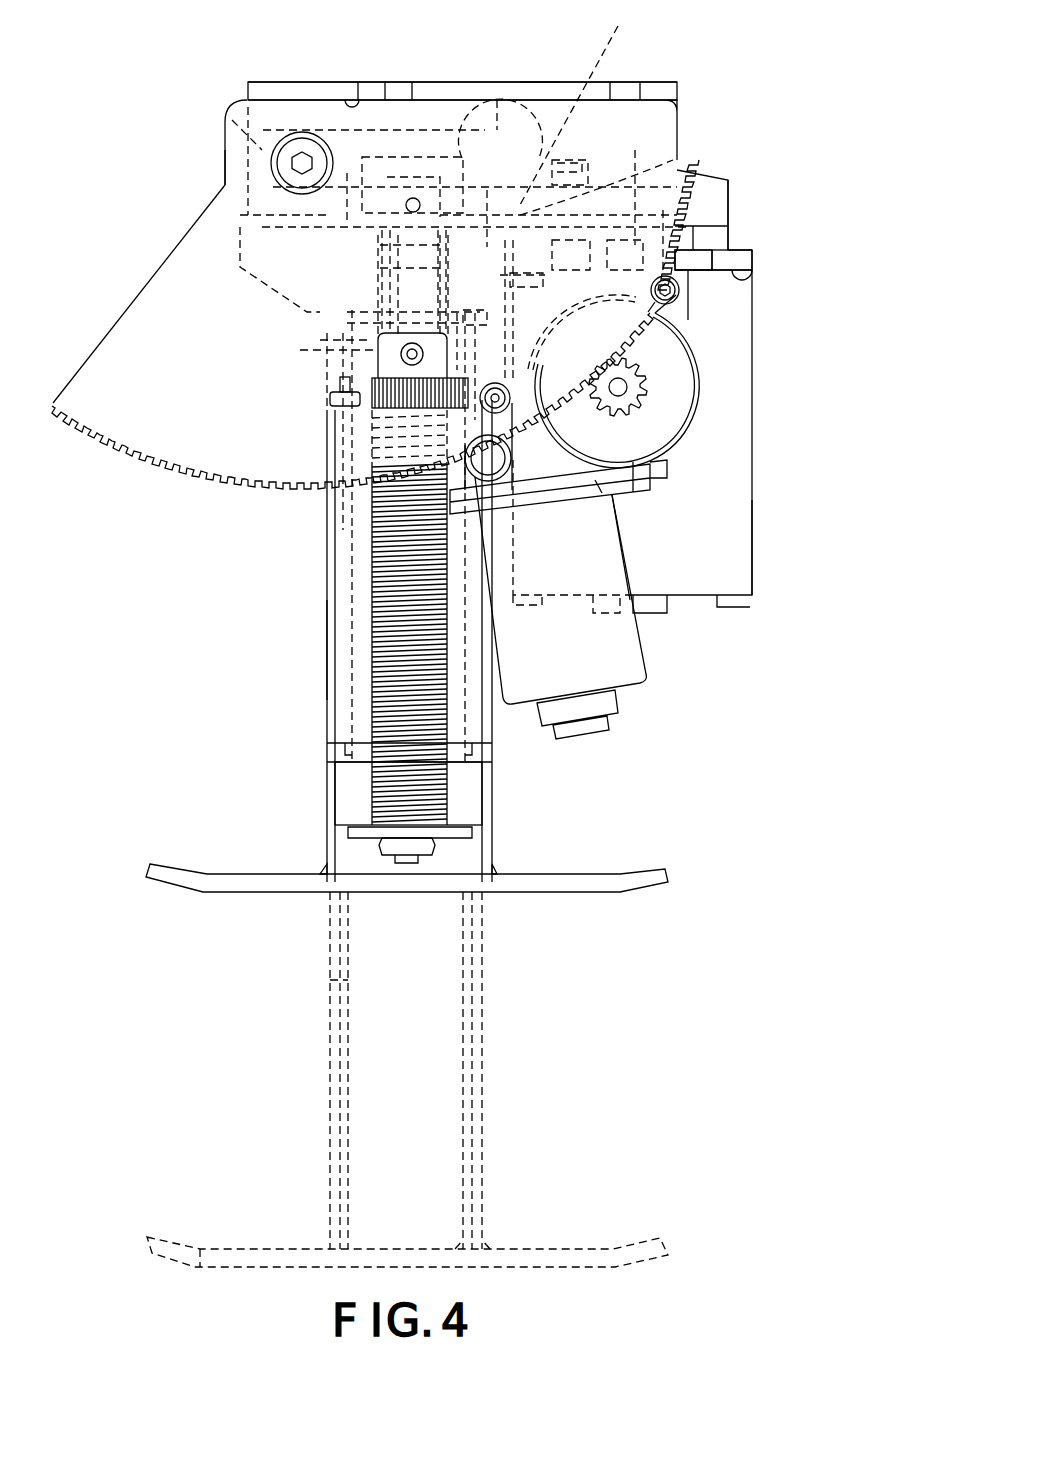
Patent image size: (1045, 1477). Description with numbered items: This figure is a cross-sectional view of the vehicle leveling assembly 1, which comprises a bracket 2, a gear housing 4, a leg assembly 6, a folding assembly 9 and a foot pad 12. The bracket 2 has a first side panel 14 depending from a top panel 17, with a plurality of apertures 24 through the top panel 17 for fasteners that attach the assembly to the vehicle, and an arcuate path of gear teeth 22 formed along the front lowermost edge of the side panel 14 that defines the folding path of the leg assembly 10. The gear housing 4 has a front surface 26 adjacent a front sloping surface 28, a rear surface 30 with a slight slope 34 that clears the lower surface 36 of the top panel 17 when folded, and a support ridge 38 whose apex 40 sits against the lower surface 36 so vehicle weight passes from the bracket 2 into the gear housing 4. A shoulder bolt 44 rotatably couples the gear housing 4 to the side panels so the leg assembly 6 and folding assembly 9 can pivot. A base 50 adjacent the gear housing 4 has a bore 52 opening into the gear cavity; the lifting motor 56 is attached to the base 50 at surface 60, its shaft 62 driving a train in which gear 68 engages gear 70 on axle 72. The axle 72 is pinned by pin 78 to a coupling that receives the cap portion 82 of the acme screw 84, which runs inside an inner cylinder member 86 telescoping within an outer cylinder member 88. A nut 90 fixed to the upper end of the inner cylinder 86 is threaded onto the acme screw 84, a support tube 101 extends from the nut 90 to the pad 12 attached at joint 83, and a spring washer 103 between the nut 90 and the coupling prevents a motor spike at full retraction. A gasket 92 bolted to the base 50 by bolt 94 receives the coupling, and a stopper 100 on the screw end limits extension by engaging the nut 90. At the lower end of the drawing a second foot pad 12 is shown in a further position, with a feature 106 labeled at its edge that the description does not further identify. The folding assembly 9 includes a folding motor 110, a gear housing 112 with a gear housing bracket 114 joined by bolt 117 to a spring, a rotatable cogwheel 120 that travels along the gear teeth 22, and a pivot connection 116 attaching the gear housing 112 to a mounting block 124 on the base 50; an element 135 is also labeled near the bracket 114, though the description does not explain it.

The vehicle leveling assembly 1 is at (848, 682).
The bracket 2 is at (315, 60).
The gear housing 4 is at (740, 160).
The leg assembly 6 is at (815, 533).
The folding assembly 9 is at (686, 700).
The leg assembly 10 is at (278, 769).
The foot pad 12 is at (625, 874).
The first side panel 14 is at (667, 118).
The top panel 17 is at (522, 82).
The path of gear teeth 22 is at (270, 483).
The apertures 24 is at (403, 88).
The front surface 26 is at (730, 195).
The front sloping surface 28 is at (590, 117).
The rear surface 30 is at (245, 203).
The slight slope 34 is at (232, 116).
The lower surface 36 is at (352, 100).
The support ridge 38 is at (514, 139).
The apex 40 is at (497, 100).
The shoulder bolt 44 is at (300, 165).
The base 50 is at (262, 272).
The bore 52 is at (383, 260).
The lifting motor 56 is at (737, 490).
The surface 60 is at (732, 273).
The shaft 62 is at (697, 257).
The gear 68 is at (682, 160).
The gear 70 is at (579, 102).
The axle 72 is at (430, 299).
The pin 78 is at (413, 352).
The cap portion 82 is at (497, 333).
The joint 83 is at (487, 1247).
The acme screw 84 is at (372, 590).
The inner cylinder member 86 is at (487, 1107).
The outer cylinder member 88 is at (493, 792).
The nut 90 is at (360, 808).
The gasket 92 is at (317, 330).
The bolt 94 is at (326, 360).
The stopper 100 is at (440, 847).
The support tube 101 is at (340, 980).
The spring washer 103 is at (363, 747).
The base foot 106 is at (222, 1267).
The folding motor 110 is at (630, 663).
The gear housing 112 is at (677, 407).
The gear housing bracket 114 is at (540, 463).
The pivot connection 116 is at (688, 297).
The bolt 117 is at (540, 355).
The cogwheel 120 is at (642, 372).
The mounting block 124 is at (687, 289).
The bracket arm 135 is at (595, 480).